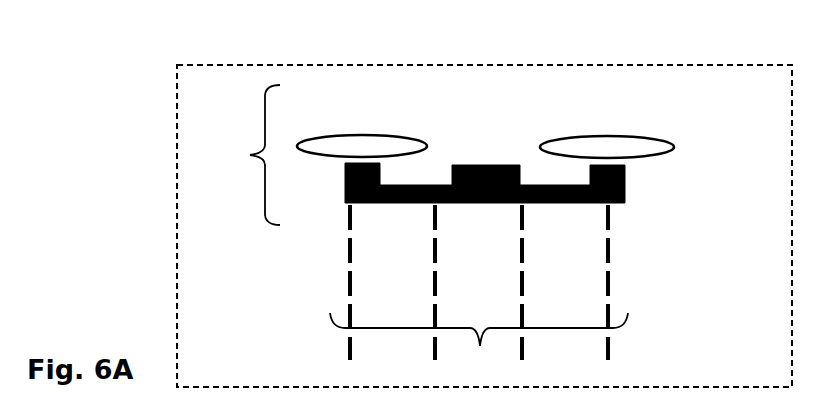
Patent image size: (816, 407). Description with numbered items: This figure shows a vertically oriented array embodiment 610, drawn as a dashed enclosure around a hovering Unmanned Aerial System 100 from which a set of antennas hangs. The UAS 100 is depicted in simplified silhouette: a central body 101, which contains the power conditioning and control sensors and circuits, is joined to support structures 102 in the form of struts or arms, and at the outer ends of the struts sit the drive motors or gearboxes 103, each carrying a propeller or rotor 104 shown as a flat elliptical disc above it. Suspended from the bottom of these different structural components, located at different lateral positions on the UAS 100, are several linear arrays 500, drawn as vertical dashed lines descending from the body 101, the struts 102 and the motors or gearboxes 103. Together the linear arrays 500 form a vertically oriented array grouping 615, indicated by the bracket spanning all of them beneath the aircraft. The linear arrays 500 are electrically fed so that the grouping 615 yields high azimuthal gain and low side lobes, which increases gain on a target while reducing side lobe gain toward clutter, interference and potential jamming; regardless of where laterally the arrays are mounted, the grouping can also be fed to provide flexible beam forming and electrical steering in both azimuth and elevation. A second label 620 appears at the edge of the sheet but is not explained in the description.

The vertically oriented array embodiment 610 is at (251, 62).
The second package element 620 is at (210, 405).
The Unmanned Aerial System 100 is at (238, 155).
The central body 101 is at (487, 160).
The support structure 102 is at (489, 162).
The drive motor or gearbox 103 is at (633, 185).
The propeller or rotor 104 is at (610, 131).
The linear array 500 is at (614, 247).
The vertically oriented array grouping 615 is at (479, 347).